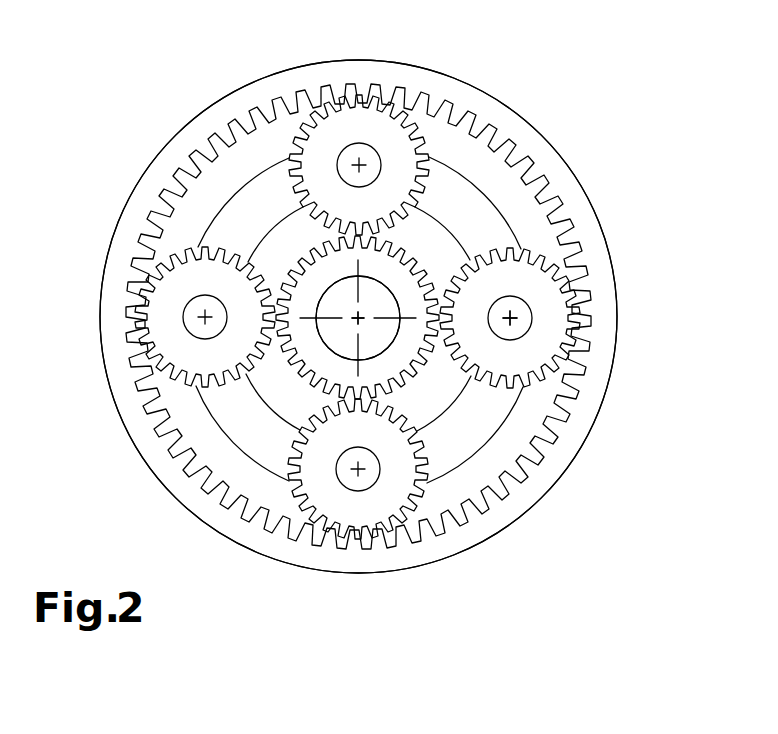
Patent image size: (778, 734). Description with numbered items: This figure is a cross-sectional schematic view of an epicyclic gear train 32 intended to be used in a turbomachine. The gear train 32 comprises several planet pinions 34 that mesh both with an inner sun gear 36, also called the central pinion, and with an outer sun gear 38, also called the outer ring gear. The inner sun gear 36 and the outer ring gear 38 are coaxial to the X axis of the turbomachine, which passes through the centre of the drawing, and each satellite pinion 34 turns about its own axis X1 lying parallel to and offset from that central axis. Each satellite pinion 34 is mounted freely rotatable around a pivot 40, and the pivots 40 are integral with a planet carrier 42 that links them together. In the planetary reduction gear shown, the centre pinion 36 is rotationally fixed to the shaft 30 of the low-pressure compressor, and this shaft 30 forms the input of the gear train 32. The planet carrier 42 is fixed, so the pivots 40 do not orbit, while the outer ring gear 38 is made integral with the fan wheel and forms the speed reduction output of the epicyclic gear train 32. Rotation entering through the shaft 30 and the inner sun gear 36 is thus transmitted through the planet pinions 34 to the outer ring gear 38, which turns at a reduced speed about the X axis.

The shaft 30 is at (378, 333).
The gear train 32 is at (574, 117).
The planet pinion 34 is at (322, 153).
The inner sun gear 36 is at (405, 247).
The outer ring gear 38 is at (492, 520).
The pivot 40 is at (367, 155).
The planet carrier 42 is at (440, 435).
The X axis X is at (360, 317).
The planet gear axis X1 is at (520, 326).